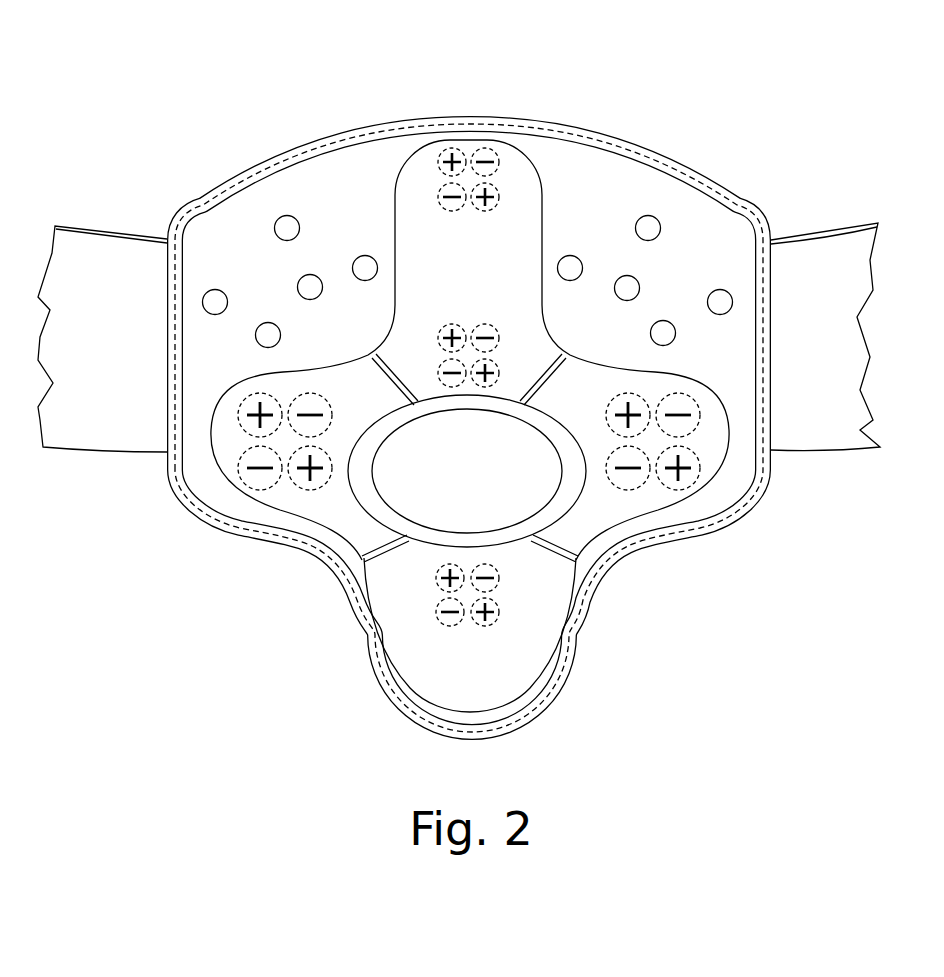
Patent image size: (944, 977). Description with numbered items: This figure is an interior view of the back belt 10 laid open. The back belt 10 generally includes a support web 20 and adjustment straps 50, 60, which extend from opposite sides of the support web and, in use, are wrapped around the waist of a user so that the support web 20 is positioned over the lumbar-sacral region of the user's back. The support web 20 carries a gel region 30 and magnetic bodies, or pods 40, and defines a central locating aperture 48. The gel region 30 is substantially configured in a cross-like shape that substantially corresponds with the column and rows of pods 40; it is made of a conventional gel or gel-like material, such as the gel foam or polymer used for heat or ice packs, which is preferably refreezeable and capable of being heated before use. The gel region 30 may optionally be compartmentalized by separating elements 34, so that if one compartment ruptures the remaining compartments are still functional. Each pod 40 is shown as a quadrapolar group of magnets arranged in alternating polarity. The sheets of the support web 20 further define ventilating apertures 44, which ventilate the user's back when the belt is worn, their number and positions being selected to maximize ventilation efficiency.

The back belt 10 is at (319, 103).
The support web 20 is at (598, 186).
The gel region 30 is at (517, 668).
The separating elements 34 is at (386, 376).
The magnetic bodies (pods) 40 is at (483, 322).
The ventilating apertures 44 is at (285, 226).
The locating aperture 48 is at (455, 470).
The adjustment strap 50 is at (815, 273).
The adjustment strap 60 is at (98, 268).